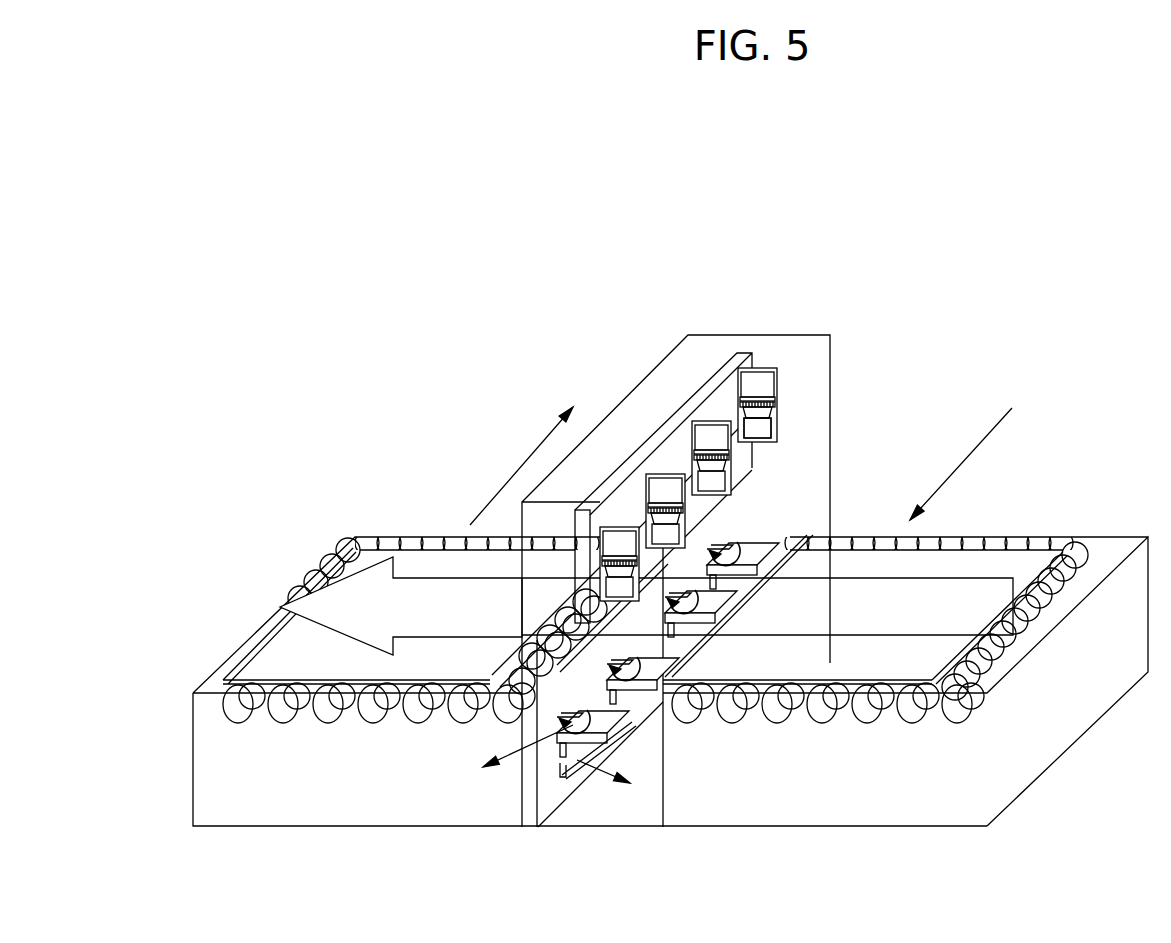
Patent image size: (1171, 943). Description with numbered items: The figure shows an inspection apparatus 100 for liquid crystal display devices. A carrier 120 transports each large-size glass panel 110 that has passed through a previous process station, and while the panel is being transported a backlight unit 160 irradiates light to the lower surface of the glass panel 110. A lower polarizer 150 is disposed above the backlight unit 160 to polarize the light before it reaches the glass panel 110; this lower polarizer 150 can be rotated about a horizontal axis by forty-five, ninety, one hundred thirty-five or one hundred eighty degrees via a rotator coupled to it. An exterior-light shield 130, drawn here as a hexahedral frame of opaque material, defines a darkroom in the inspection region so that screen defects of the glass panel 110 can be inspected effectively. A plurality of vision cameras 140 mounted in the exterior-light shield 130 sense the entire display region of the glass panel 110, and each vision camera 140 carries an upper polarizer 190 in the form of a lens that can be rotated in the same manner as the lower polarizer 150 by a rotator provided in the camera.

The inspection apparatus 100 is at (513, 308).
The glass panel 110 is at (372, 558).
The carrier 120 is at (834, 797).
The exterior-light shield 130 is at (778, 357).
The vision camera 140 is at (757, 393).
The lower polarizer 150 is at (573, 727).
The backlight unit 160 is at (576, 763).
The upper polarizer 190 is at (759, 431).